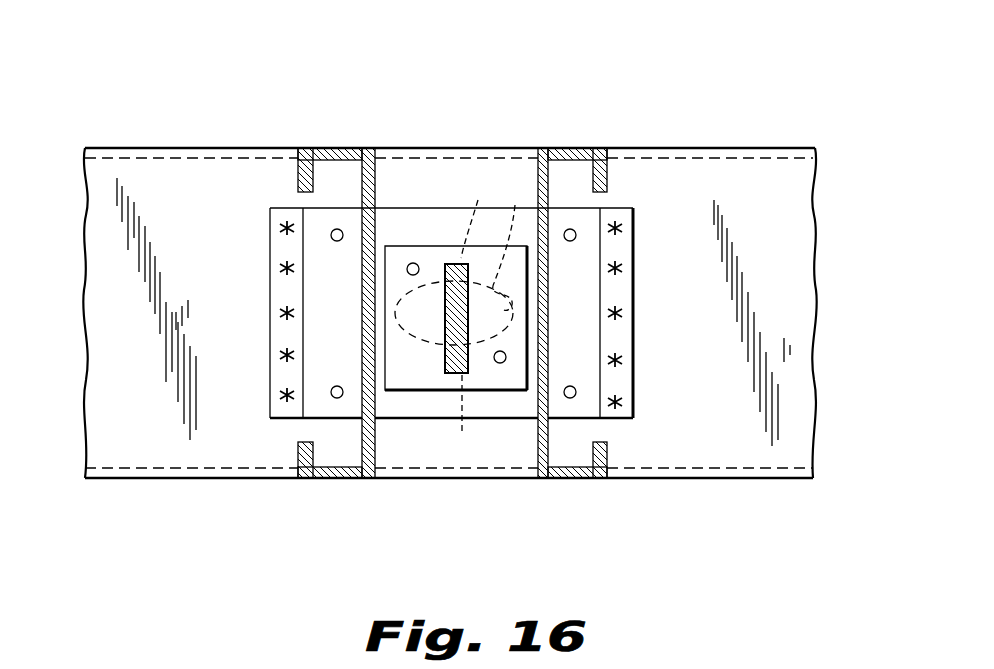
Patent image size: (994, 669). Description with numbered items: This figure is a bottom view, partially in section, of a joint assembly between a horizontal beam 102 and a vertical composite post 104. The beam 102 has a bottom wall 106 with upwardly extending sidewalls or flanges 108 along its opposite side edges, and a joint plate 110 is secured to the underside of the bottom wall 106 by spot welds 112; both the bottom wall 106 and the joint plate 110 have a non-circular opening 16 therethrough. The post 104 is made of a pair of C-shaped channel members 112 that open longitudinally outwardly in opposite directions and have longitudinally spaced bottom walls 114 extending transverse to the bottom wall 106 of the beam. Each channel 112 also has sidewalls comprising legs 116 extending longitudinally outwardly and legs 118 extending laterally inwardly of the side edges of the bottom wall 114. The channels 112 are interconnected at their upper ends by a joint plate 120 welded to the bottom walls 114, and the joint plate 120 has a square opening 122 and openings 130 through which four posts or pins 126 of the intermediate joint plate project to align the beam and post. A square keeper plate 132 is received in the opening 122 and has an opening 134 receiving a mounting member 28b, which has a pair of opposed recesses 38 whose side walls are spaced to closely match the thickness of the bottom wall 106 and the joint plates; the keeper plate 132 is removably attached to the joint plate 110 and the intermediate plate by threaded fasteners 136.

The non-circular opening 16 is at (513, 242).
The mounting member 28b is at (443, 305).
The opposed recesses 38 is at (467, 316).
The horizontal beam 102 is at (708, 142).
The vertical composite post 104 is at (467, 485).
The bottom wall 106 is at (800, 274).
The sidewalls or flanges 108 is at (768, 158).
The joint plate 110 is at (623, 302).
The C-shaped channel members 112 is at (476, 273).
The bottom walls 114 is at (377, 452).
The legs 116 is at (338, 478).
The legs 118 is at (298, 455).
The joint plate 120 is at (577, 305).
The square opening 122 is at (489, 282).
The posts or pins 126 is at (333, 230).
The openings 130 is at (331, 238).
The keeper plate 132 is at (515, 281).
The opening 134 is at (445, 341).
The threaded fasteners 136 is at (407, 270).